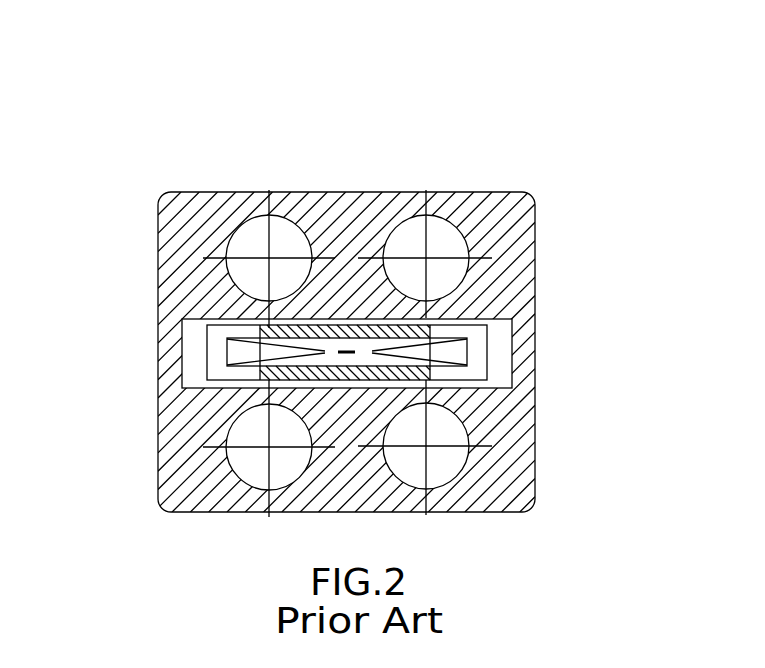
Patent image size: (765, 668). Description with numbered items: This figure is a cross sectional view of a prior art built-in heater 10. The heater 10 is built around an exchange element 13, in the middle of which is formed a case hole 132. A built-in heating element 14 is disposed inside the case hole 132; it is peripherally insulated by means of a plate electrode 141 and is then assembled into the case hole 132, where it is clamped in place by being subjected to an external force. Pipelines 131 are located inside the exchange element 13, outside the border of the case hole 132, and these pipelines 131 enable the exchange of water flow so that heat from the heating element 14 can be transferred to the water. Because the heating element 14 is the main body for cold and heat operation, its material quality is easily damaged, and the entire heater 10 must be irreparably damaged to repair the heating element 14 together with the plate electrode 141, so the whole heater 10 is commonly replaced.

The heater 10 is at (342, 268).
The exchange element 13 is at (510, 257).
The pipelines 131 is at (260, 233).
The case hole 132 is at (193, 343).
The built-in heating element 14 is at (457, 350).
The plate electrode 141 is at (343, 330).